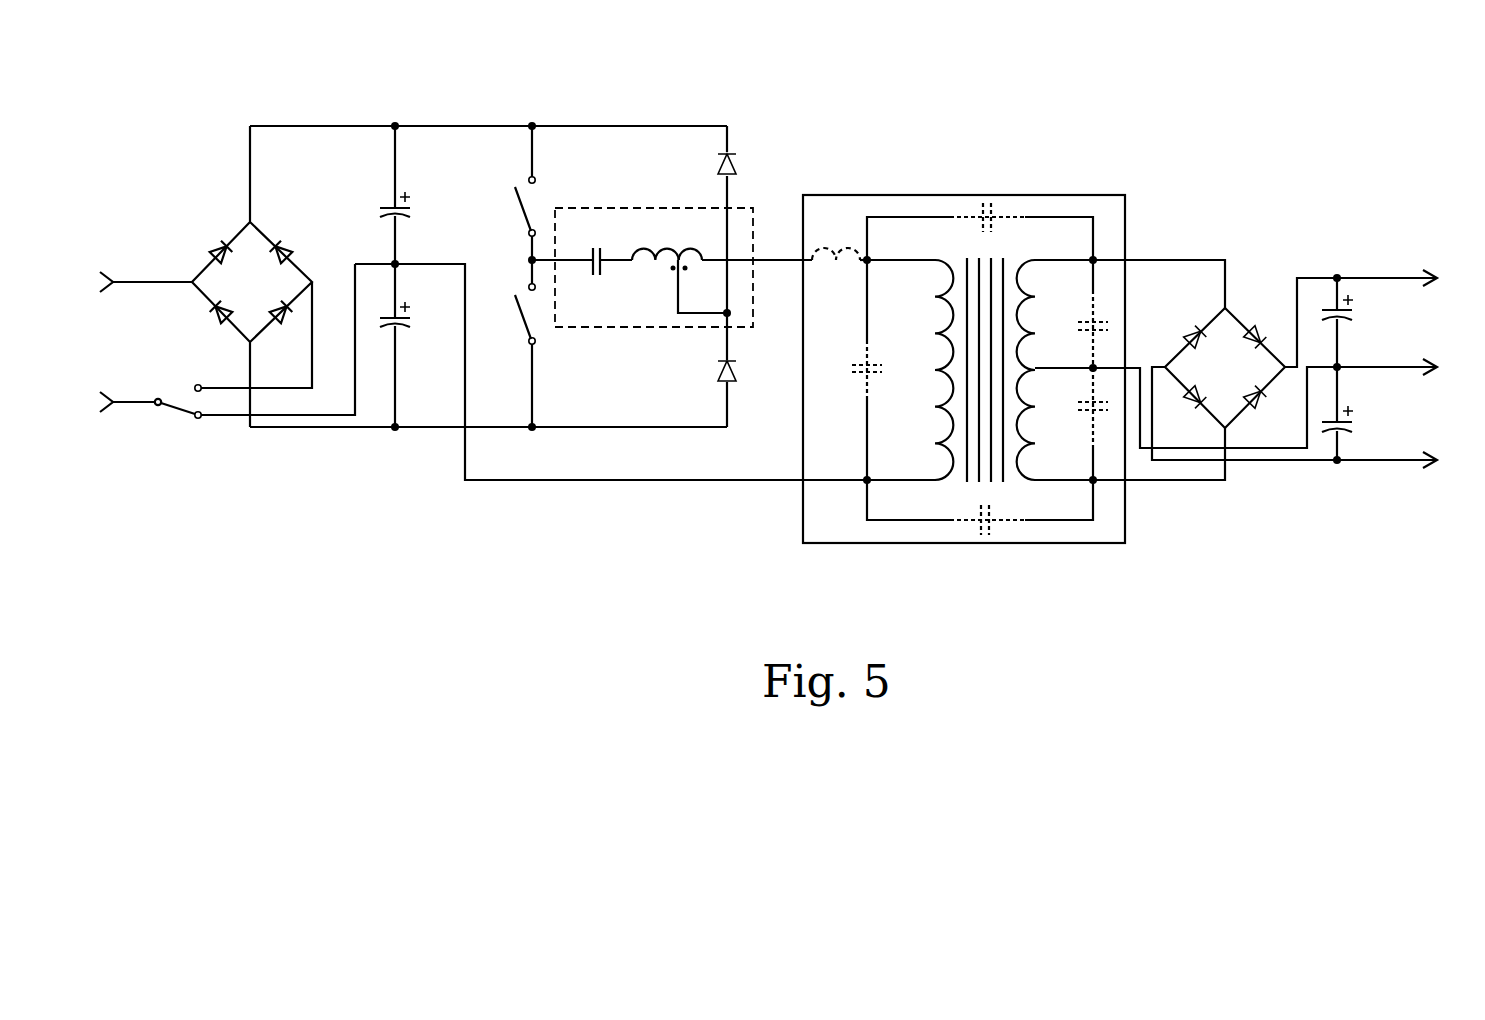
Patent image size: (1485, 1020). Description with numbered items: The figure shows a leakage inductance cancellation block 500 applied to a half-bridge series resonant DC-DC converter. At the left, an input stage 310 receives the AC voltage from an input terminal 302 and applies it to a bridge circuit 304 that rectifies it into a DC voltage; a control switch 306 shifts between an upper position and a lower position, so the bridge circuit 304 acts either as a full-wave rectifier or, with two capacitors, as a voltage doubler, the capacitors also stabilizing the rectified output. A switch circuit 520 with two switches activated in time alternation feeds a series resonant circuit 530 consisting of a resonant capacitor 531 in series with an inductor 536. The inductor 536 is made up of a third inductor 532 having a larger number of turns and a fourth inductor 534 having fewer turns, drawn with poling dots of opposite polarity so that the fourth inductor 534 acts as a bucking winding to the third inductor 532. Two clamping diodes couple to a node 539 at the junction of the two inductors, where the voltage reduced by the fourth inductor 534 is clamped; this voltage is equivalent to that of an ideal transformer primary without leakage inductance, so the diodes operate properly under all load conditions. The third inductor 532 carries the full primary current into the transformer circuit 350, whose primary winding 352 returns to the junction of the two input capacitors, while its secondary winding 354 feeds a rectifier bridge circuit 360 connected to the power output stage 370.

The input terminal 302 is at (108, 276).
The bridge circuit 304 is at (228, 213).
The control switch 306 is at (110, 408).
The input stage 310 is at (395, 108).
The transformer circuit 350 is at (969, 359).
The primary winding 352 is at (823, 493).
The secondary winding 354 is at (1108, 452).
The rectifier bridge circuit 360 is at (1243, 318).
The power output stage 370 is at (1450, 260).
The leakage inductance cancellation block 500 is at (383, 573).
The switch circuit 520 is at (550, 148).
The series resonant circuit 530 is at (672, 230).
The resonant capacitor Cr4 531 is at (595, 217).
The third inductor 532 is at (657, 268).
The fourth inductor 534 is at (690, 283).
The inductor 536 is at (651, 293).
The node 539 is at (723, 327).